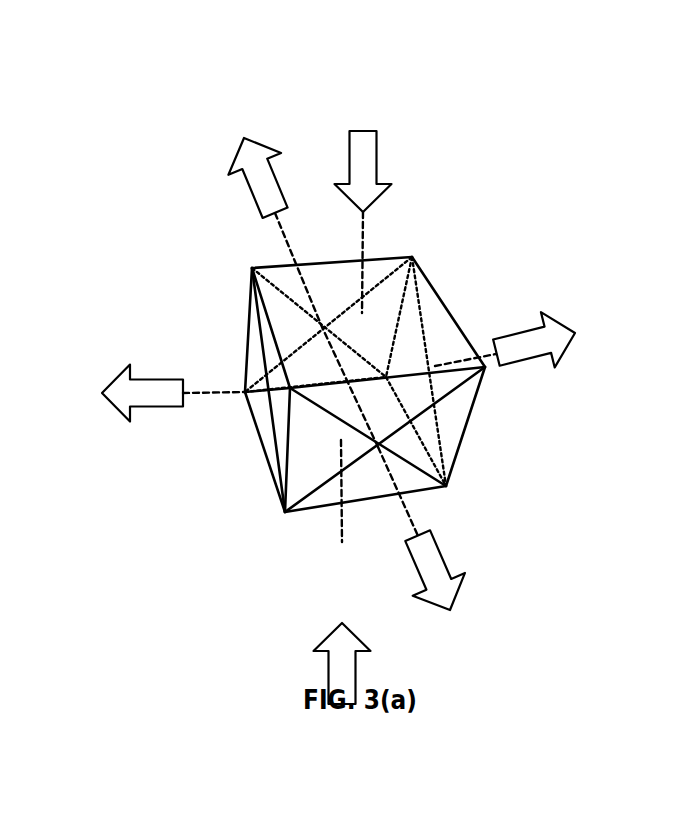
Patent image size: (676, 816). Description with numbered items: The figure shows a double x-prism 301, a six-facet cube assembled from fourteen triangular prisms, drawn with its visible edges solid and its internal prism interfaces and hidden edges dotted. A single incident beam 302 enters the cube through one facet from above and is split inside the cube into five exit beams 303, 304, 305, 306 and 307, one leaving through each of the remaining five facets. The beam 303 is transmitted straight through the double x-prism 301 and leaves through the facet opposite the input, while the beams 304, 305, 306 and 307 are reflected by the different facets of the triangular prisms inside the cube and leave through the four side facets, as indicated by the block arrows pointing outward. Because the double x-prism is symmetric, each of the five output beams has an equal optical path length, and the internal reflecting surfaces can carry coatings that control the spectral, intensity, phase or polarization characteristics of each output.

The double x-prism 301 is at (438, 273).
The incident beam 302 is at (350, 132).
The exit beam 303 is at (328, 570).
The exit beam 304 is at (533, 357).
The exit beam 305 is at (117, 405).
The exit beam 306 is at (239, 150).
The exit beam 307 is at (463, 580).